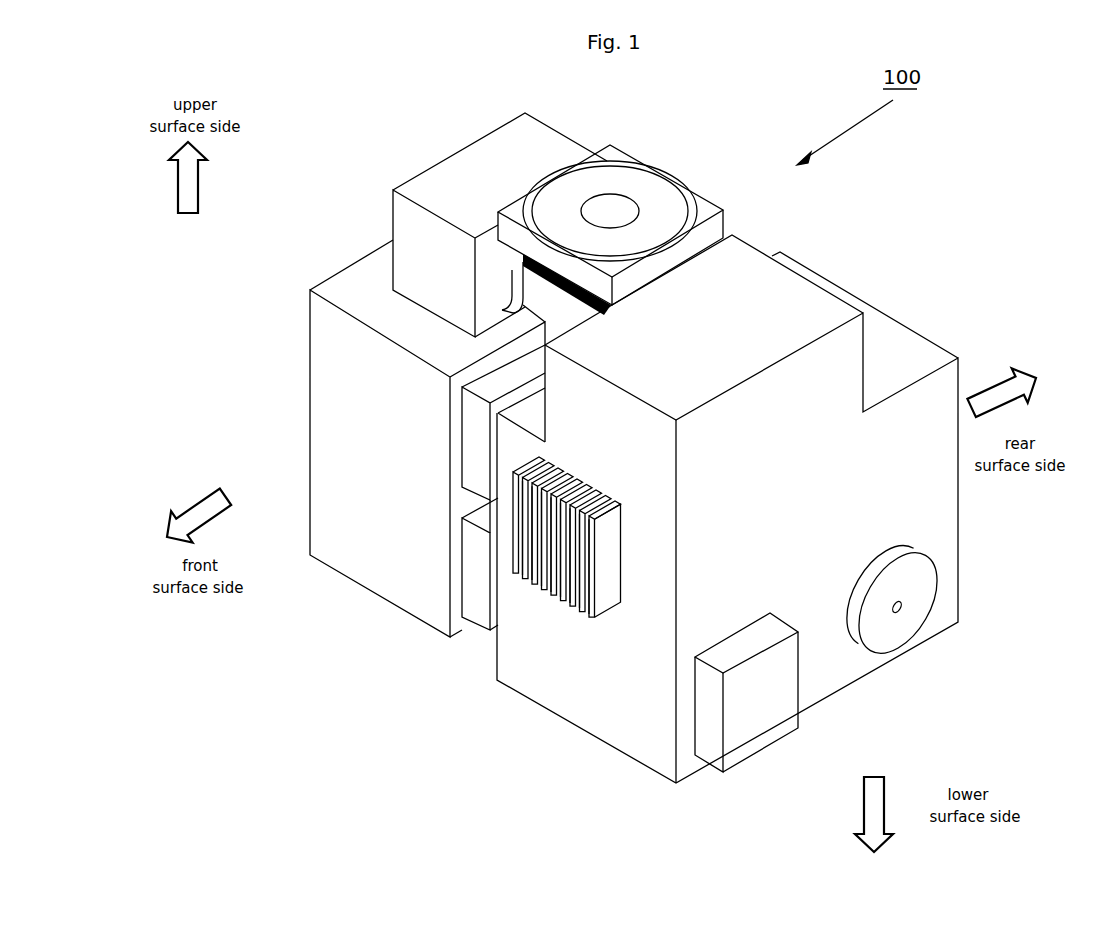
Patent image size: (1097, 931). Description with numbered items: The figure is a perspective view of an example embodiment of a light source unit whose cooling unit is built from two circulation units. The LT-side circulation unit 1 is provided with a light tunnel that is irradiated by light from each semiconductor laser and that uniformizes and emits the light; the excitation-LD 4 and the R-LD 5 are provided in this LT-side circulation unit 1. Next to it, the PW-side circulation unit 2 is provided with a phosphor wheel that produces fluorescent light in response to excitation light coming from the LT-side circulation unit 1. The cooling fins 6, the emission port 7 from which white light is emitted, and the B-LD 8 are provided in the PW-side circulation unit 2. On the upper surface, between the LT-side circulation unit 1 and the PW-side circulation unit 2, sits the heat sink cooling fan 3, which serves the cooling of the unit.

The LT-side circulation unit 1 is at (393, 493).
The PW-side circulation unit 2 is at (757, 312).
The heat sink cooling fan 3 is at (637, 190).
The excitation-LD 4 is at (357, 435).
The R-LD 5 is at (472, 590).
The cooling fins 6 is at (570, 590).
The emission port 7 is at (910, 602).
The B-LD 8 is at (772, 725).